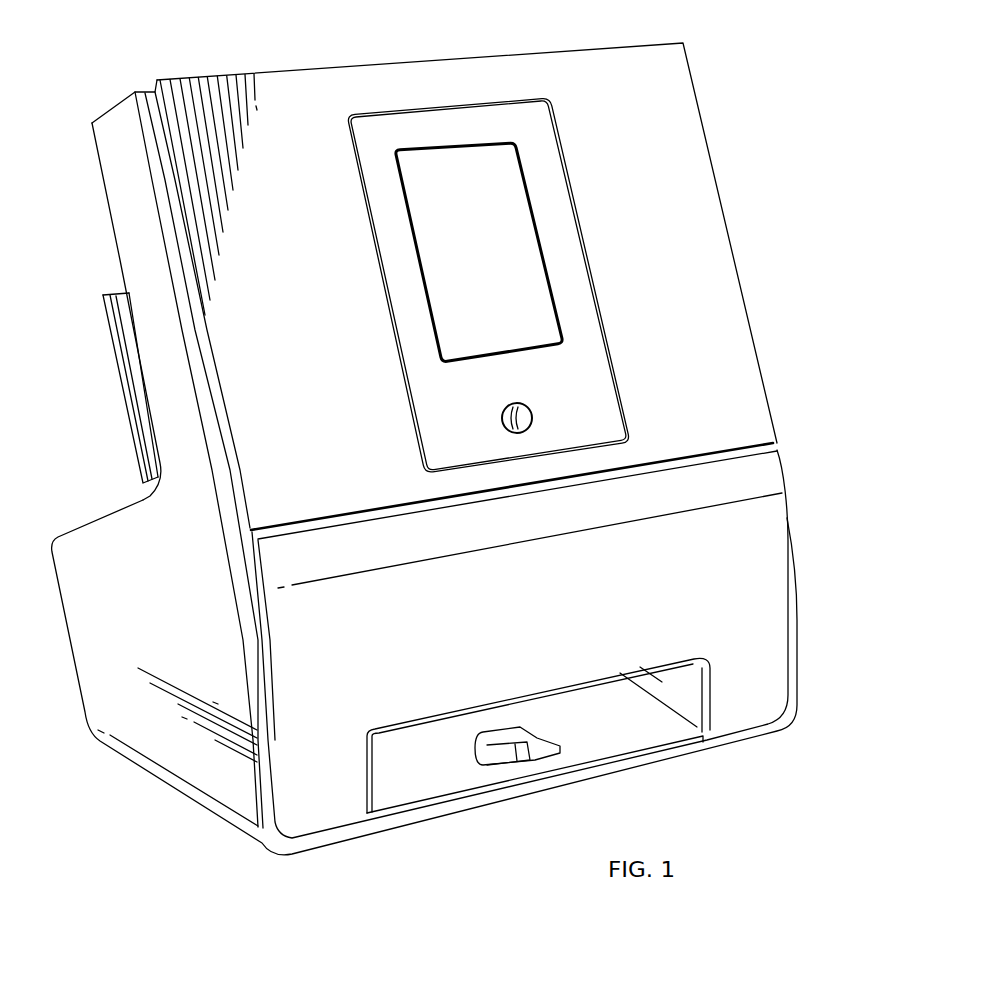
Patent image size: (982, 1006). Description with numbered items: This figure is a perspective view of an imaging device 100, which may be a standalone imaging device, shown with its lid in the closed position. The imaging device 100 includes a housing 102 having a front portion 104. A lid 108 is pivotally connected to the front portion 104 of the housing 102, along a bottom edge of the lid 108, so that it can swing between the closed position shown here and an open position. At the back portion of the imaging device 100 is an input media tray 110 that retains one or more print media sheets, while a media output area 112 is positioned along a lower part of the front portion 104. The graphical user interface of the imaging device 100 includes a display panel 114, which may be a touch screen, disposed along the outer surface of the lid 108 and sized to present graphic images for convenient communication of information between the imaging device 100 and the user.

The imaging device 100 is at (768, 108).
The housing 102 is at (93, 537).
The front portion 104 is at (773, 528).
The lid 108 is at (710, 263).
The input media tray 110 is at (105, 313).
The media output area 112 is at (675, 677).
The display panel 114 is at (507, 195).